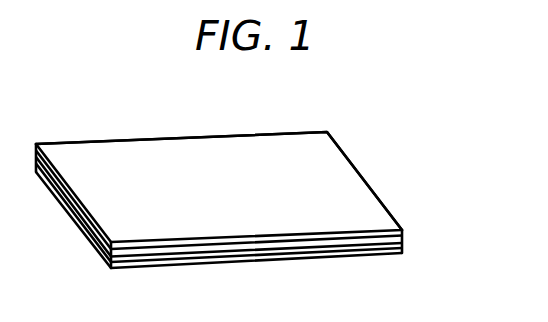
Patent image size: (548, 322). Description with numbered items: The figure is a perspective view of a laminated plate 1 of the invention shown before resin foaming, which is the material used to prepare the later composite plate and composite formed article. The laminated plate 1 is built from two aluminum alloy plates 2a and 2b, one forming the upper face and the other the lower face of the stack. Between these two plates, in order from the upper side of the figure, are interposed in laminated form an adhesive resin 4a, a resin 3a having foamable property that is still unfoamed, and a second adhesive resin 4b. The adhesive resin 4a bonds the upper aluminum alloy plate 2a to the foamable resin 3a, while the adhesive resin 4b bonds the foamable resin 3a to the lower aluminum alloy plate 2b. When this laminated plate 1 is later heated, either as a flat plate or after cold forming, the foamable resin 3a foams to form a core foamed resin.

The laminated plate 1 is at (357, 148).
The aluminum alloy plate 2a is at (347, 207).
The aluminum alloy plate 2b is at (332, 257).
The resin having foamable property 3a is at (403, 244).
The adhesive resin 4a is at (403, 234).
The adhesive resin 4b is at (403, 250).